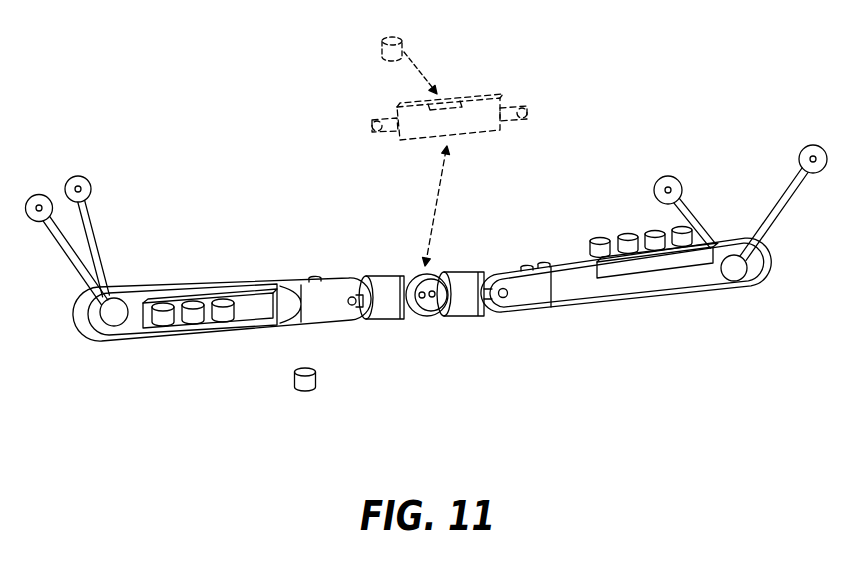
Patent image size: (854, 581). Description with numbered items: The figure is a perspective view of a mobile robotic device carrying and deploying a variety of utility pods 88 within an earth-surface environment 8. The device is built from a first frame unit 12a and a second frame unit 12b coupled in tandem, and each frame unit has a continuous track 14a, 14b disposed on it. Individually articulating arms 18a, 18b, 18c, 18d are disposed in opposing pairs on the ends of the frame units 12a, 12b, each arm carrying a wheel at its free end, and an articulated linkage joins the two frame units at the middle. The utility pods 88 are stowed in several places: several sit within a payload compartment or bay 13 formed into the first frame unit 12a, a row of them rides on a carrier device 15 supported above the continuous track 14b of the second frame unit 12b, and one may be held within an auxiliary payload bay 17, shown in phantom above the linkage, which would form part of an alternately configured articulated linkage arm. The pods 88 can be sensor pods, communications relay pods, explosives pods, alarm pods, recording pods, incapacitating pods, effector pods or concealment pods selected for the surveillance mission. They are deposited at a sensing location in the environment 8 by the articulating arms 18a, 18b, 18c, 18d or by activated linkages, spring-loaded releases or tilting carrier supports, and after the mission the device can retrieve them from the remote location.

The earth-surface environment 8 is at (288, 430).
The first frame unit 12a is at (137, 323).
The second frame unit 12b is at (677, 280).
The payload compartment or bay 13 is at (240, 305).
The continuous track 14a is at (250, 280).
The continuous track 14b is at (640, 305).
The carrier device 15 is at (607, 267).
The auxiliary payload bay 17 is at (446, 100).
The articulating arm 18a is at (92, 228).
The articulating arm 18b is at (61, 252).
The articulating arm 18c is at (790, 182).
The articulating arm 18d is at (693, 207).
The utility pods 88 is at (382, 50).